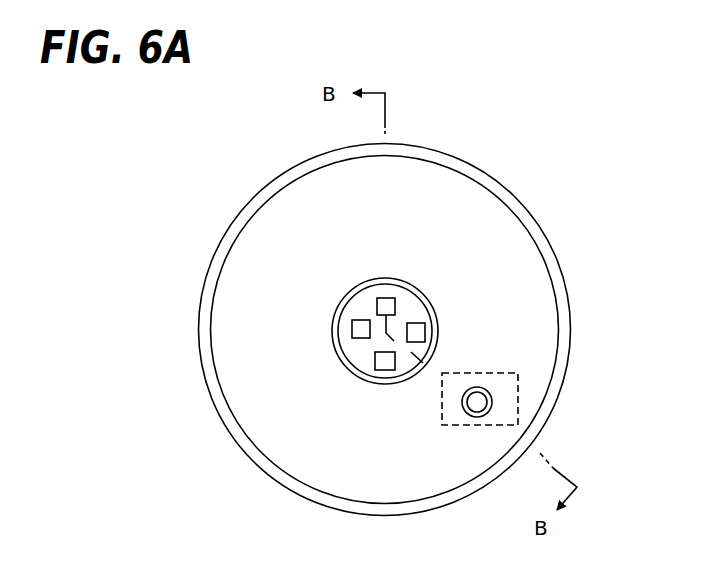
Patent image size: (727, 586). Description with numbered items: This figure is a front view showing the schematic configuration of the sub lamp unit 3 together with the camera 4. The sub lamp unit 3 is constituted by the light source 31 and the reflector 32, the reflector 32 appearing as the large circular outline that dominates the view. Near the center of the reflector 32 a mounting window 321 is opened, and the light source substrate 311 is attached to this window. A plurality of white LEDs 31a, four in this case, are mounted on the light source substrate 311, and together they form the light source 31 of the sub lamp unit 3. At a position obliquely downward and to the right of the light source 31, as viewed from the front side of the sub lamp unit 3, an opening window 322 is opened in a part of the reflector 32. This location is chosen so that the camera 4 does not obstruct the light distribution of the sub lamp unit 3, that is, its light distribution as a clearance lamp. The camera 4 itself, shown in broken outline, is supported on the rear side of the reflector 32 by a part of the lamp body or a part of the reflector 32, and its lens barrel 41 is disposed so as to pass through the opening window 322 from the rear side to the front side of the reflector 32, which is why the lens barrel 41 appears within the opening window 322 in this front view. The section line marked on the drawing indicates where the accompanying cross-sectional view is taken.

The sub lamp unit 3 is at (479, 164).
The reflector 32 is at (545, 248).
The mounting window 321 is at (357, 294).
The light source 31 is at (343, 349).
The light source substrate 311 is at (360, 363).
The white LED 31a is at (397, 306).
The opening window 322 is at (486, 391).
The camera 4 is at (520, 398).
The lens barrel 41 is at (488, 412).